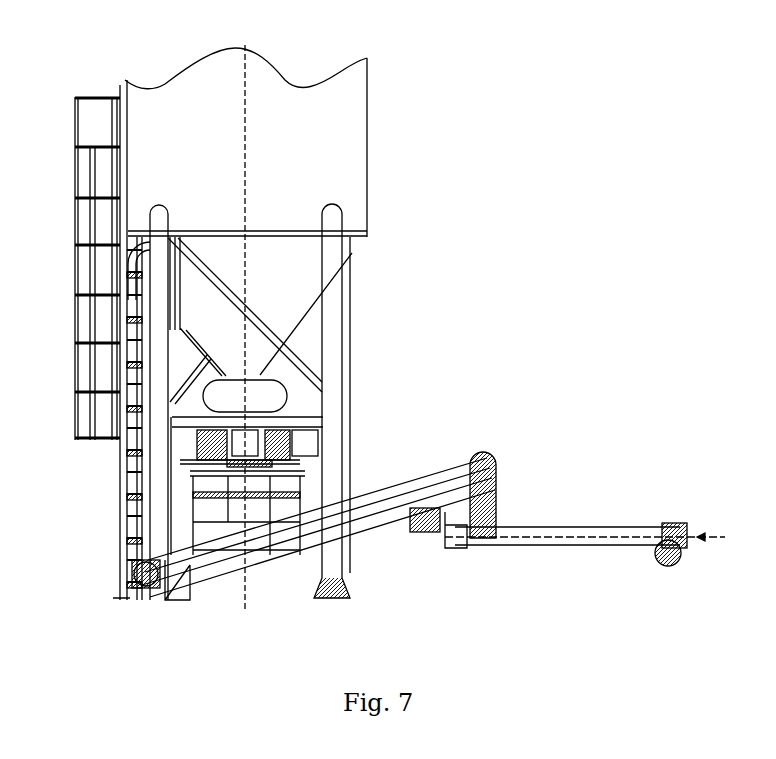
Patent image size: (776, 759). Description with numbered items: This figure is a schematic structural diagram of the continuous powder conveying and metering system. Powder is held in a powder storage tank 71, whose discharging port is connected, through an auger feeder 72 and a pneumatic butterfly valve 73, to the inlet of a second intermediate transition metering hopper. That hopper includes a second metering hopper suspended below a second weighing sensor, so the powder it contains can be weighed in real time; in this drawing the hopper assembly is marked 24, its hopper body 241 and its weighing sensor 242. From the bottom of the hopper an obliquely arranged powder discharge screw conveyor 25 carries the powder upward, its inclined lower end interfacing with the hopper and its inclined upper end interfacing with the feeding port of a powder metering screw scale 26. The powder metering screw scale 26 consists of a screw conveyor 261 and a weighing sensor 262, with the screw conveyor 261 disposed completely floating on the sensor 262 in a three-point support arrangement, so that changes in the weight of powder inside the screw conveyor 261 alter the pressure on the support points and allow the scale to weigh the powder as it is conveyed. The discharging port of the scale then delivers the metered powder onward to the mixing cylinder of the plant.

The powder storage tank 71 is at (270, 310).
The auger feeder 72 is at (245, 430).
The pneumatic butterfly valve 73 is at (290, 447).
The feeding port 242 is at (300, 470).
The feeding device 24 is at (195, 508).
The feeding frame 241 is at (228, 470).
The inclined conveyor 25 is at (357, 523).
The horizontal conveyor 26 is at (587, 527).
The conveyor frame 261 is at (585, 535).
The drive motor 262 is at (661, 563).